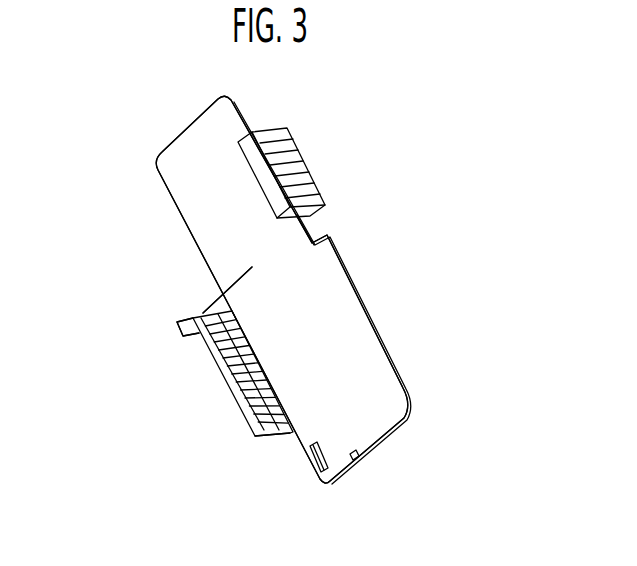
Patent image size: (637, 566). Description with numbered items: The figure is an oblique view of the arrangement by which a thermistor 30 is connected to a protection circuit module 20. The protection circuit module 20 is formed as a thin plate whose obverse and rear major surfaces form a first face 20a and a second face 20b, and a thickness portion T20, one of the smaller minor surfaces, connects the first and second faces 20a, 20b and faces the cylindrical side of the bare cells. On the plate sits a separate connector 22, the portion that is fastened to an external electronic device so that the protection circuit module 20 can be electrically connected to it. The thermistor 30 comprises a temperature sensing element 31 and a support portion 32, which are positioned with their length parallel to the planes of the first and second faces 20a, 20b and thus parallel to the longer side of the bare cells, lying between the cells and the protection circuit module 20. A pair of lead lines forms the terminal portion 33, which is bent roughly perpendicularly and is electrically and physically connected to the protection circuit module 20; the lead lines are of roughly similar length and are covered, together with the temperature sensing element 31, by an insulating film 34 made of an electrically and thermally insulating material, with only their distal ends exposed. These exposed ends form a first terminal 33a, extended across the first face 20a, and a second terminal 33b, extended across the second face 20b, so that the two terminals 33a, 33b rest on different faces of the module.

The protection circuit module 20 is at (369, 318).
The first face 20a is at (327, 307).
The second face 20b is at (403, 383).
The connector 22 is at (283, 160).
The thermistor 30 is at (191, 332).
The temperature sensing element 31 is at (270, 436).
The support portion 32 is at (258, 420).
The terminal portion 33 is at (148, 224).
The first terminal 33a is at (207, 310).
The second terminal 33b is at (213, 307).
The insulating film 34 is at (237, 387).
The thickness portion T20 is at (302, 447).